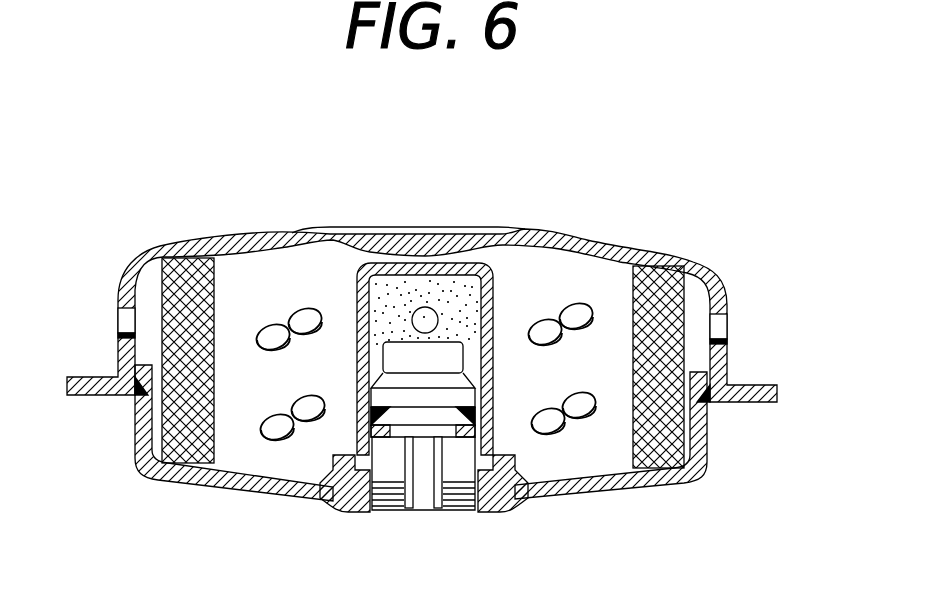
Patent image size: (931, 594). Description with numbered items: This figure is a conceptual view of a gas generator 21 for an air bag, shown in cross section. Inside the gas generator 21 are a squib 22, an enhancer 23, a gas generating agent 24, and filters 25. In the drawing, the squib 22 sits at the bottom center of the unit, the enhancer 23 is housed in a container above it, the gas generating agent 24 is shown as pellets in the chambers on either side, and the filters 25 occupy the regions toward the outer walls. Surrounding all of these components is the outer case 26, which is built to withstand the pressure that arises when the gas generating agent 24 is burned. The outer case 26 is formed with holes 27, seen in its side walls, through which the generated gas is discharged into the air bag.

The gas generator 21 is at (530, 178).
The squib 22 is at (410, 398).
The enhancer 23 is at (462, 290).
The gas generating agent 24 is at (302, 313).
The filters 25 is at (176, 403).
The outer case 26 is at (592, 240).
The holes 27 is at (123, 320).